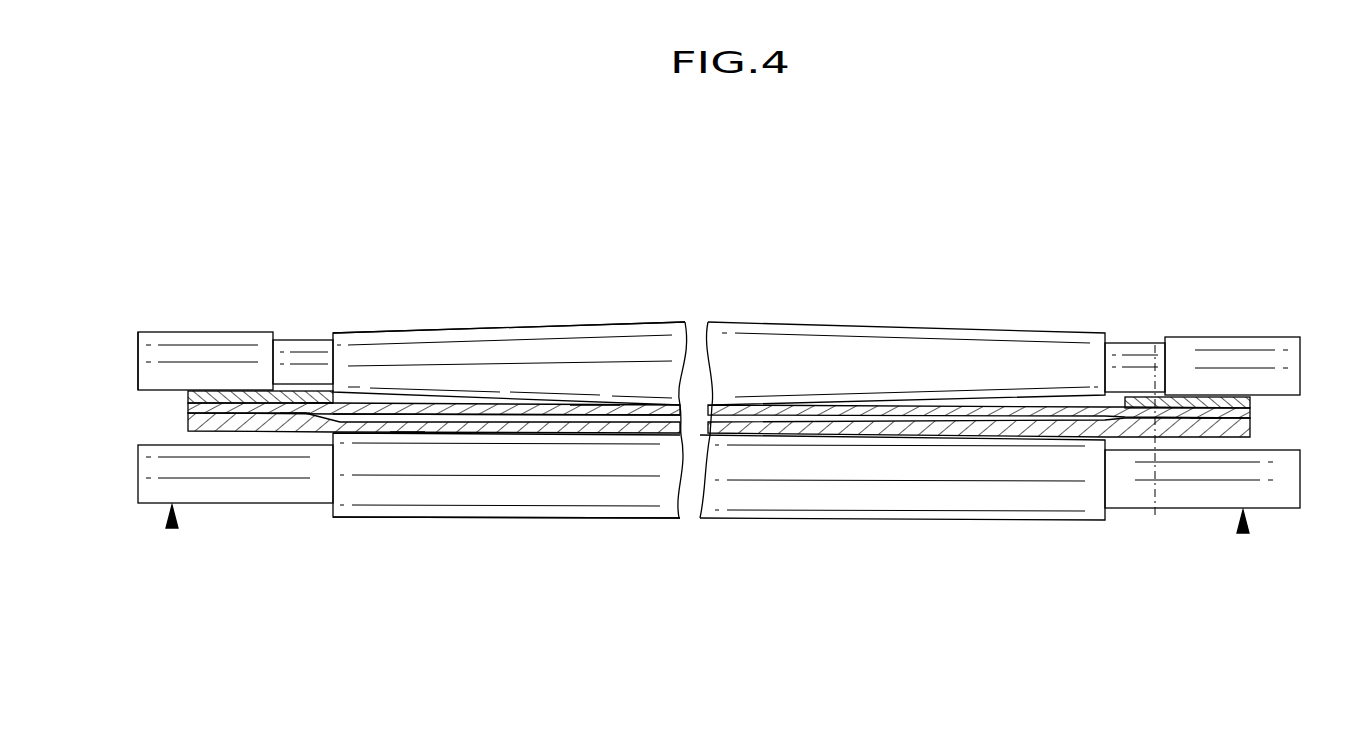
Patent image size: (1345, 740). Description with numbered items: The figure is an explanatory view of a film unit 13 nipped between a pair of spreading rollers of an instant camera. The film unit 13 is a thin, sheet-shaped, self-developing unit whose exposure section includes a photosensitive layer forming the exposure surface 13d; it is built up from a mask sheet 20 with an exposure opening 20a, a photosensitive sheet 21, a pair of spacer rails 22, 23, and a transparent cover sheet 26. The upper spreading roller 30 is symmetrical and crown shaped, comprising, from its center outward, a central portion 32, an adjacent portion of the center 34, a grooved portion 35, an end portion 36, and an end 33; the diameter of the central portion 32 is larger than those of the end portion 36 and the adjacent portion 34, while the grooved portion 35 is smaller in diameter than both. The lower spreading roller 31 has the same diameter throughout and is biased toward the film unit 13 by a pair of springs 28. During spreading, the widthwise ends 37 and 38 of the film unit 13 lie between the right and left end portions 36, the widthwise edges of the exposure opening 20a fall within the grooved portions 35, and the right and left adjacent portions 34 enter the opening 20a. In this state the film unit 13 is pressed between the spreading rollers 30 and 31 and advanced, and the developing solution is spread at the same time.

The film unit 13 is at (230, 452).
The exposure surface 13d is at (438, 404).
The mask sheet 20 is at (240, 400).
The exposure opening 20a is at (321, 392).
The photosensitive sheet 21 is at (592, 410).
The spacer rail 22 is at (293, 412).
The spacer rail 23 is at (1203, 420).
The transparent cover sheet 26 is at (407, 428).
The spring 28 is at (172, 526).
The spreading roller 30 is at (781, 310).
The spreading roller 31 is at (776, 542).
The central portion 32 is at (641, 323).
The end 33 is at (138, 348).
The adjacent portion of the center 34 is at (487, 325).
The grooved portion 35 is at (303, 340).
The end portion 36 is at (193, 332).
The end of the film unit 37 is at (188, 397).
The end of the film unit 38 is at (1250, 410).